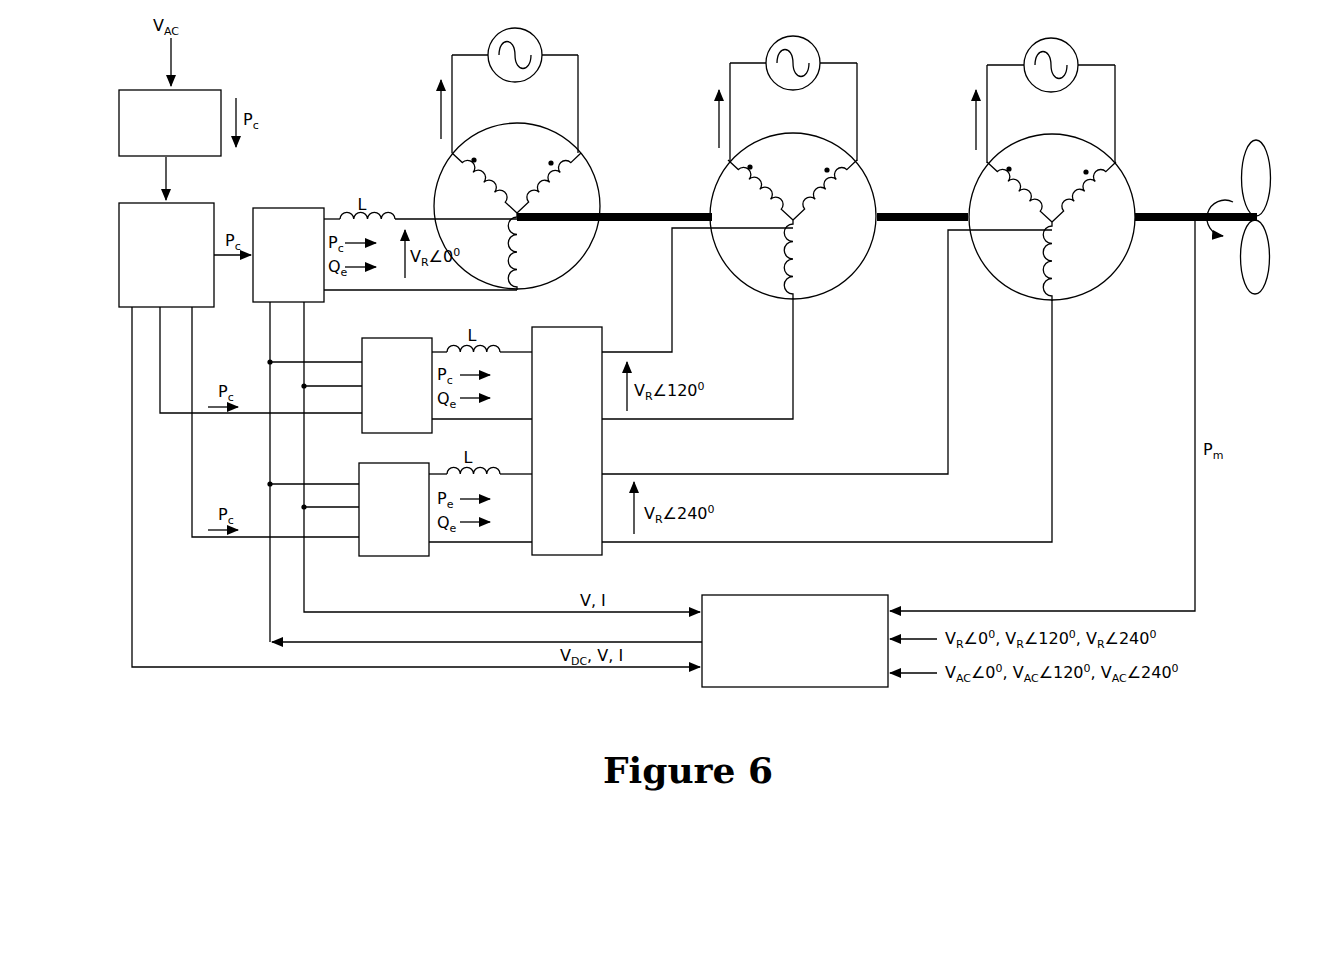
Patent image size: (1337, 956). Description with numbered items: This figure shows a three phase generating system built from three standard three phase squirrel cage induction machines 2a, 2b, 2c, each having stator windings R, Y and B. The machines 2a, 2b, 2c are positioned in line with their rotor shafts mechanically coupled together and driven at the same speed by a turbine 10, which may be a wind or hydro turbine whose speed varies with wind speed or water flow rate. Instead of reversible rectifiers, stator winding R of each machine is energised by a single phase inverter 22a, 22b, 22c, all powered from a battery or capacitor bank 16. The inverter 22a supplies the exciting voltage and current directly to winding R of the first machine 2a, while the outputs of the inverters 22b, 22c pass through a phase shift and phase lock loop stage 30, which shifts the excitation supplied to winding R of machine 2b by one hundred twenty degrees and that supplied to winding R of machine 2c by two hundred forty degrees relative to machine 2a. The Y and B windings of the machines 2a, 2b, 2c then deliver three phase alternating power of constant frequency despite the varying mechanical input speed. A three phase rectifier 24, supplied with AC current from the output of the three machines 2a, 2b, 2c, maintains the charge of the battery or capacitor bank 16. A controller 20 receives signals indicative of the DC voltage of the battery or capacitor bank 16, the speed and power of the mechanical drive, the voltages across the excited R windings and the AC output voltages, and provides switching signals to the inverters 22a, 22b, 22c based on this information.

The three phase rectifier 24 is at (170, 123).
The battery or capacitor bank 16 is at (166, 255).
The single phase inverter 22a is at (288, 255).
The single phase inverter 22b is at (397, 385).
The single phase inverter 22c is at (394, 509).
The phase shift and phase lock loop stage 30 is at (567, 441).
The controller 20 is at (795, 641).
The three-phase induction machine 2a is at (601, 146).
The three-phase induction machine 2b is at (884, 140).
The three-phase induction machine 2c is at (1138, 142).
The turbine 10 is at (1271, 166).